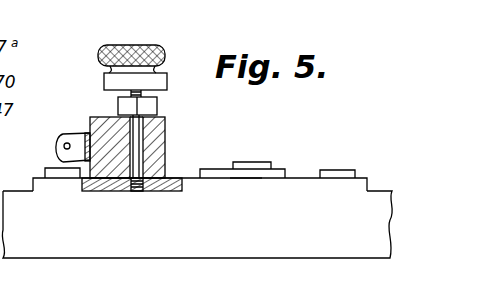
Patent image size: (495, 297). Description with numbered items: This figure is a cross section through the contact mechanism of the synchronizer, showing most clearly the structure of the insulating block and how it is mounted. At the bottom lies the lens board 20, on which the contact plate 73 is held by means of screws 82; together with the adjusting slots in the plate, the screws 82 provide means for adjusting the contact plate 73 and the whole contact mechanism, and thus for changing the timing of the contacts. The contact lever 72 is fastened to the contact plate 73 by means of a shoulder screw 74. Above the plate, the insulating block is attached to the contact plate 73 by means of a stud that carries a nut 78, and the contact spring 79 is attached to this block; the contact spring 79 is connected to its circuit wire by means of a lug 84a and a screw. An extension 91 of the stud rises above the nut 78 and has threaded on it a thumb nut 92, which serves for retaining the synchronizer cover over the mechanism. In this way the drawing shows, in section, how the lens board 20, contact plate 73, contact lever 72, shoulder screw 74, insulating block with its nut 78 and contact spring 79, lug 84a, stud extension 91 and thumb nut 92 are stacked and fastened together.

The lens board 20 is at (110, 245).
The contact lever 72 is at (255, 172).
The contact plate 73 is at (218, 183).
The shoulder screw 74 is at (253, 163).
The nut 78 is at (148, 106).
The contact spring 79 is at (89, 132).
The screws 82 is at (45, 170).
The lug 84a is at (62, 145).
The extension of stud 91 is at (128, 92).
The thumb nut 92 is at (98, 52).